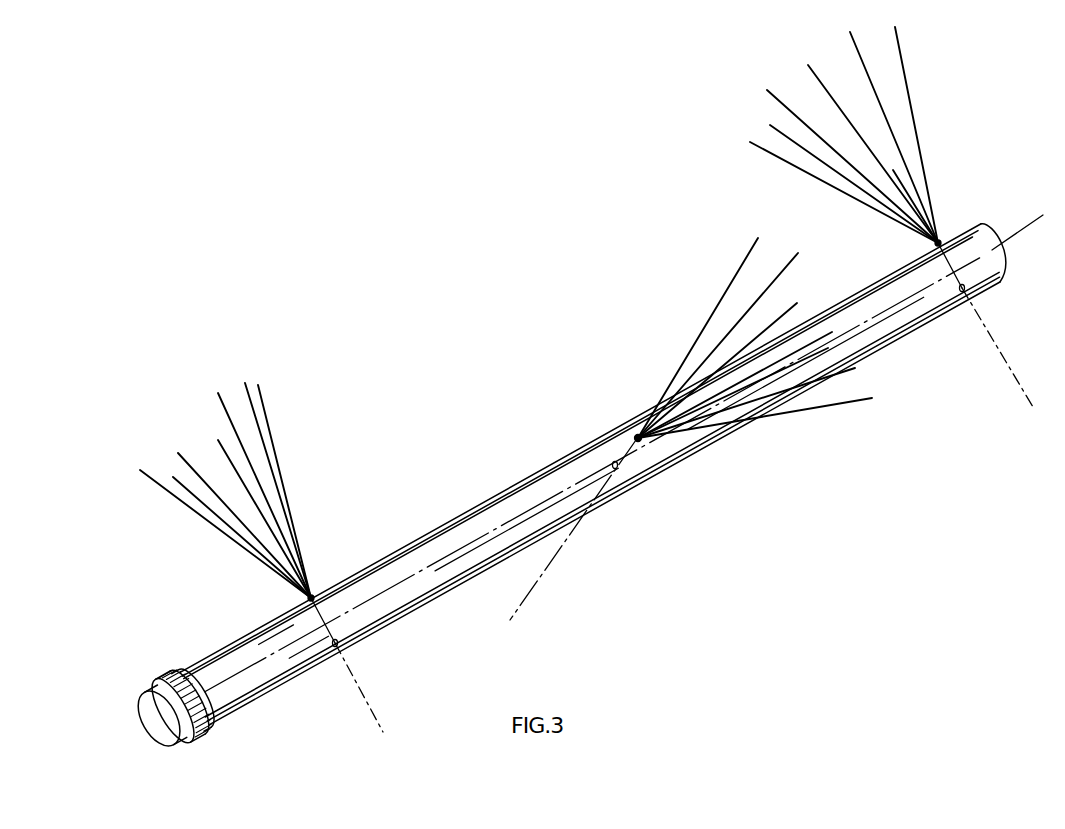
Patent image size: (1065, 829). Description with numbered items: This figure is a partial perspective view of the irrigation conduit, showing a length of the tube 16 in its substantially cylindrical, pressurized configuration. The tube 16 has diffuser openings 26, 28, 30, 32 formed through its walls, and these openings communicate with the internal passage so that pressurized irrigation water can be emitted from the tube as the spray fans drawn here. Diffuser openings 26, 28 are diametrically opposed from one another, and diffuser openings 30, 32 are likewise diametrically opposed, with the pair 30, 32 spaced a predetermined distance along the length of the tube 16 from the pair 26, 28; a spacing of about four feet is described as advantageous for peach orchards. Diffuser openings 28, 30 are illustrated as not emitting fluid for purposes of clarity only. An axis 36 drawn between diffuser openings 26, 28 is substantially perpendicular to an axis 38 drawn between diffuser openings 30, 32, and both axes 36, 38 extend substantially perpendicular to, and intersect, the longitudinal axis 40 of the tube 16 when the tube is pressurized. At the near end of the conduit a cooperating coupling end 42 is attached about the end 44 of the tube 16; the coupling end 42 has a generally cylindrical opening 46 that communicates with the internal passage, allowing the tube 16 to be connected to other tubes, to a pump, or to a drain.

The tube 16 is at (470, 508).
The diffuser opening 26 is at (313, 596).
The diffuser opening 28 is at (336, 647).
The diffuser opening 30 is at (607, 456).
The diffuser opening 32 is at (640, 442).
The axis 36 is at (371, 716).
The axis 38 is at (542, 578).
The longitudinal axis 40 is at (1010, 243).
The coupling end 42 is at (192, 733).
The end 44 is at (195, 668).
The cylindrical opening 46 is at (150, 720).